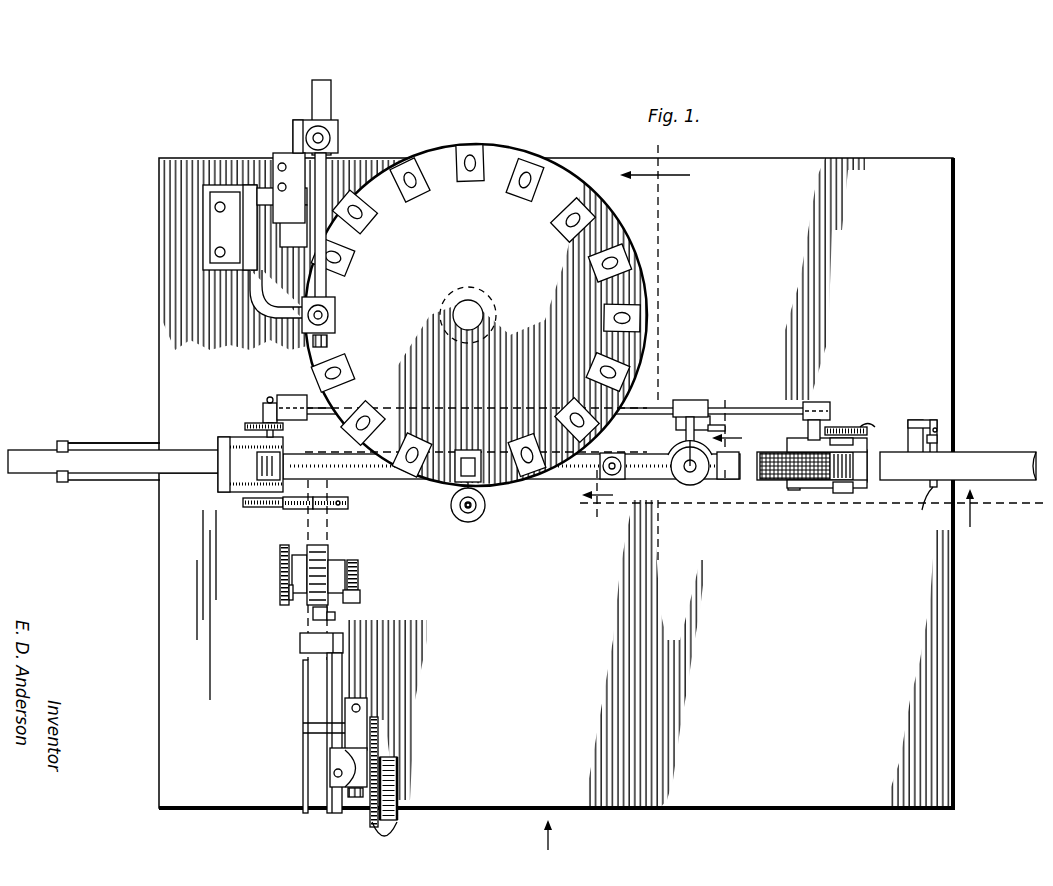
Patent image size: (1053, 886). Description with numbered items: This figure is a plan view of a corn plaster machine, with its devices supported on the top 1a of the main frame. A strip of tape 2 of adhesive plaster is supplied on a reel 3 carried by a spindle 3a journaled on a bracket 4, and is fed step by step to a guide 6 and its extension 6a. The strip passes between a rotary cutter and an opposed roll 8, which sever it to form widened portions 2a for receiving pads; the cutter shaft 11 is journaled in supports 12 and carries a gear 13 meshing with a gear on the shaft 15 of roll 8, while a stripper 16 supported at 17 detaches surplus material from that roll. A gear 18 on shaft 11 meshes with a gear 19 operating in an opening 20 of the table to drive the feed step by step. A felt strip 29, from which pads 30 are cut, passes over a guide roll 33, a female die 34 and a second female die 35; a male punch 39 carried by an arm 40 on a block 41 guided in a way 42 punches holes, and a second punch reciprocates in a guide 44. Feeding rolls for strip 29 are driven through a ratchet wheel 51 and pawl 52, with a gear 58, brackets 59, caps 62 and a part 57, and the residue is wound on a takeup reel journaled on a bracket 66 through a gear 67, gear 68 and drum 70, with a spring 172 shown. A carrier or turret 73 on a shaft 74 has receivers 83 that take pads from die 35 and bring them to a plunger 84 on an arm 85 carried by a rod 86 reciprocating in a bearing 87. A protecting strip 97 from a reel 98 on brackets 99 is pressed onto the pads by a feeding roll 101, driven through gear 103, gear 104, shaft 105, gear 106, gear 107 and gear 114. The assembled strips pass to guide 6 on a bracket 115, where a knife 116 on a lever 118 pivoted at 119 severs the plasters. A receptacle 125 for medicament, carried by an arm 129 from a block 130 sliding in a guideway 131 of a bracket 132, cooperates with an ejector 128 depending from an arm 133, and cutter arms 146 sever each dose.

The top 1a is at (556, 483).
The strip of tape 2 is at (180, 460).
The widened portions 2a is at (640, 460).
The reel 3 is at (38, 450).
The spindle 3a is at (84, 443).
The bracket 4 is at (127, 450).
The guide 6 is at (958, 466).
The bar extension 6a is at (1008, 466).
The opposed roll 8 is at (493, 343).
The shaft 11 is at (262, 413).
The supports 12 is at (250, 508).
The gear 13 is at (719, 488).
The shaft 15 is at (812, 508).
The stripper 16 is at (240, 471).
The support 17 is at (220, 440).
The gear 18 is at (288, 509).
The gear 19 is at (342, 510).
The opening 20 is at (342, 504).
The strip 29 is at (331, 104).
The pads 30 is at (350, 405).
The guide roll 33 is at (305, 692).
The female die 34 is at (294, 123).
The second female die 35 is at (312, 341).
The male punch 39 is at (305, 138).
The arm 40 is at (327, 183).
The block 41 is at (278, 253).
The way or bearing 42 is at (252, 186).
The guide 44 is at (330, 305).
The ratchet wheel 51 is at (400, 533).
The ratchet pawl 52 is at (360, 598).
The bracket 57 is at (312, 618).
The gear 58 is at (280, 563).
The brackets or uprights 59 is at (325, 553).
The caps 62 is at (292, 590).
The bracket 66 is at (351, 702).
The gear 67 is at (375, 720).
The gear 68 is at (372, 818).
The drum 70 is at (398, 783).
The carrier or turret 73 is at (492, 294).
The shaft 74 is at (466, 311).
The receivers or pockets 83 is at (474, 181).
The plunger 84 is at (480, 447).
The arm 85 is at (457, 492).
The rod 86 is at (477, 516).
The bearing 87 is at (461, 519).
The protecting strip 97 is at (790, 460).
The reel 98 is at (770, 482).
The brackets 99 is at (825, 490).
The pressing and feeding roll 101 is at (867, 470).
The gear 103 is at (857, 428).
The gear 104 is at (833, 406).
The shaft 105 is at (708, 405).
The gear 106 is at (290, 396).
The gear 107 is at (263, 400).
The gear 114 is at (862, 427).
The bracket 115 is at (928, 437).
The cutter or knife 116 is at (933, 490).
The rocking arm or lever 118 is at (940, 432).
The pivot 119 is at (941, 424).
The receptacle or pot 125 is at (690, 487).
The ejector 128 is at (674, 479).
The arm 129 is at (344, 625).
The slidable head or block 130 is at (552, 404).
The guideway 131 is at (722, 420).
The bracket 132 is at (688, 415).
The arm 133 is at (458, 500).
The arms 146 is at (630, 479).
The spring 172 is at (396, 838).